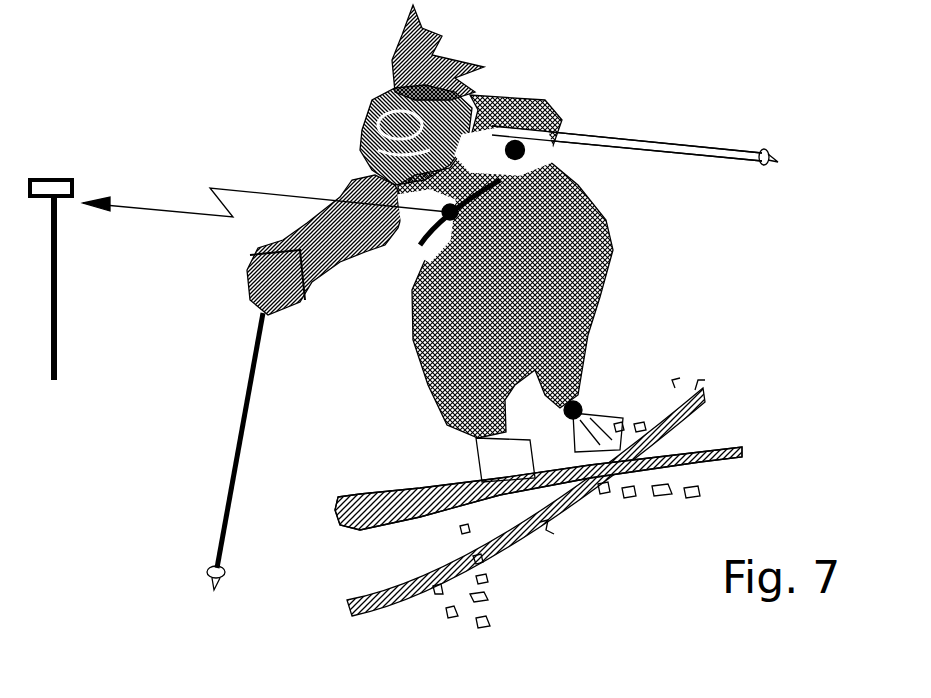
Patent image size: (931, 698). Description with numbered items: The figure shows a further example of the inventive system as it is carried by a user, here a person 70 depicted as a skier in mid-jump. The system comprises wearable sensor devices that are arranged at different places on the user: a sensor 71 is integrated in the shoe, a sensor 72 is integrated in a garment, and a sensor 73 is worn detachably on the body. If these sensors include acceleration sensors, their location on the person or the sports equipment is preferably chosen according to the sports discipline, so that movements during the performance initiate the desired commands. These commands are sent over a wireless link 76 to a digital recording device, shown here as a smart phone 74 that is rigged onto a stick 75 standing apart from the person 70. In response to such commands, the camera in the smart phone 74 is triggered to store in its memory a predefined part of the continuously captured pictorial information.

The person 70 is at (323, 58).
The sensor 71 is at (578, 405).
The sensor 72 is at (522, 155).
The sensor 73 is at (442, 210).
The smart phone 74 is at (74, 183).
The stick 75 is at (55, 312).
The wireless link 76 is at (213, 220).